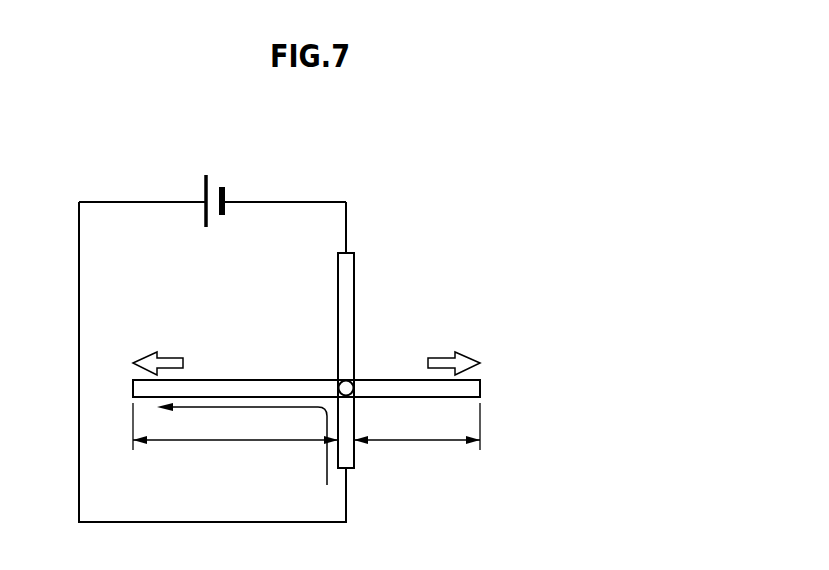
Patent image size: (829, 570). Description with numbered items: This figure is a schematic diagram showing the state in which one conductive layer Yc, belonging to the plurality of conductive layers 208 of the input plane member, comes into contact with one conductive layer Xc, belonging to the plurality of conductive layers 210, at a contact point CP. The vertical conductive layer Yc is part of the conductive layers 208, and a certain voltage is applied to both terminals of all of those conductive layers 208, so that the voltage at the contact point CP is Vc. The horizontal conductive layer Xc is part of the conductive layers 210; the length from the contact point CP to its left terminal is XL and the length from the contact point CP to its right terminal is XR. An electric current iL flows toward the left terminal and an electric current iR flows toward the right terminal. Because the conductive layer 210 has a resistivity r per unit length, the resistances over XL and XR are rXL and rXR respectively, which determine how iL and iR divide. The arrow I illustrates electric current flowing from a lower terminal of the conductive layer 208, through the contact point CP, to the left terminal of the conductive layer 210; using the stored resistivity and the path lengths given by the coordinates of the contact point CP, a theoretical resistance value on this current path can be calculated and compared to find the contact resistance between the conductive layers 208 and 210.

The conductive layers 208 is at (345, 280).
The conductive layers 210 is at (257, 385).
The contact point CP is at (351, 382).
The conductive layer Yc is at (373, 236).
The conductive layer Xc is at (501, 391).
The electric current flowing to the left terminal iL is at (158, 349).
The electric current flowing to the right terminal iR is at (454, 348).
The arrow indicating current path I is at (242, 444).
The length from the contact point to the left terminal XL is at (235, 426).
The length from the contact point to the right terminal XR is at (417, 426).